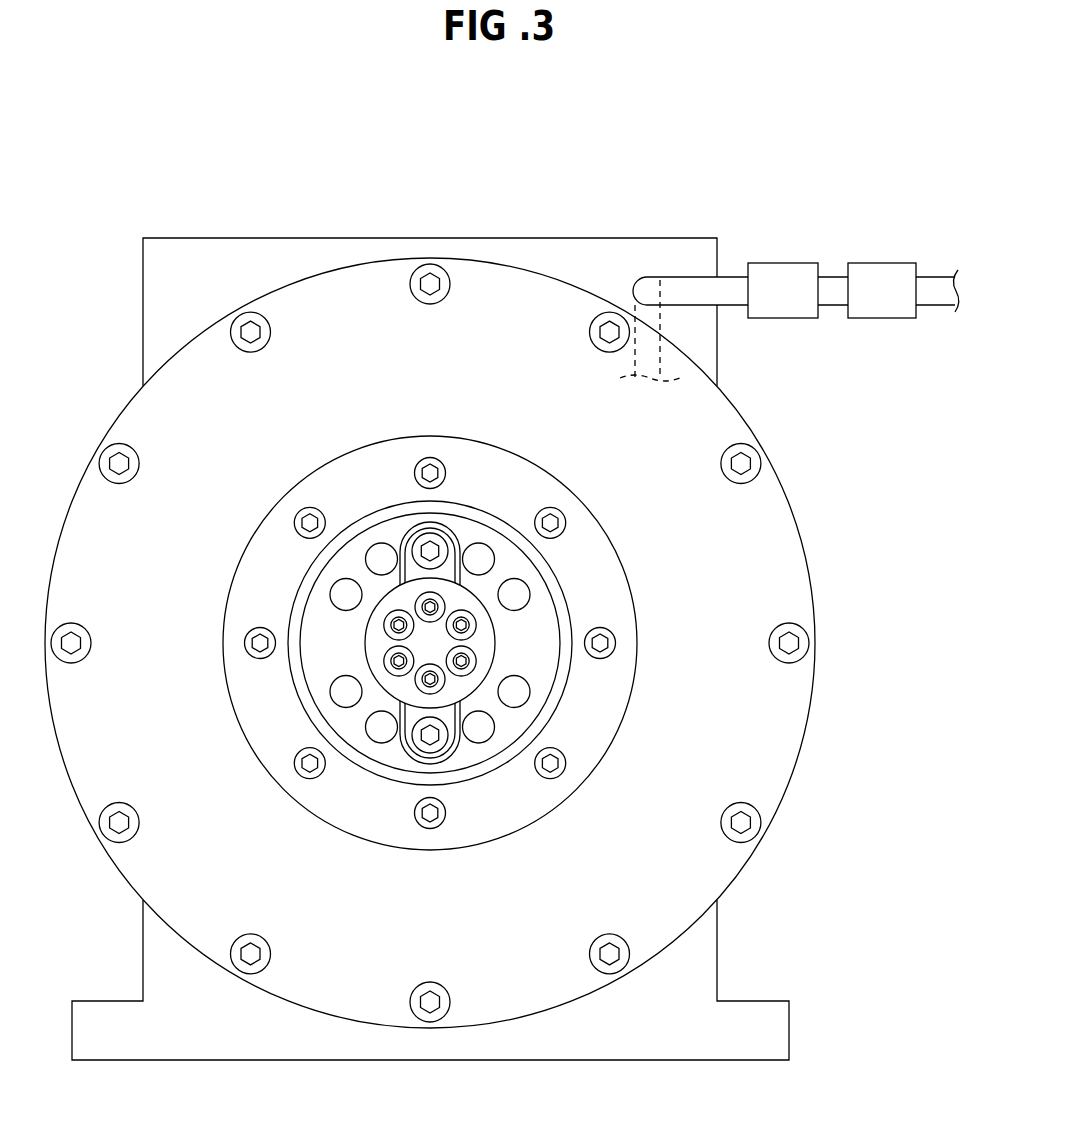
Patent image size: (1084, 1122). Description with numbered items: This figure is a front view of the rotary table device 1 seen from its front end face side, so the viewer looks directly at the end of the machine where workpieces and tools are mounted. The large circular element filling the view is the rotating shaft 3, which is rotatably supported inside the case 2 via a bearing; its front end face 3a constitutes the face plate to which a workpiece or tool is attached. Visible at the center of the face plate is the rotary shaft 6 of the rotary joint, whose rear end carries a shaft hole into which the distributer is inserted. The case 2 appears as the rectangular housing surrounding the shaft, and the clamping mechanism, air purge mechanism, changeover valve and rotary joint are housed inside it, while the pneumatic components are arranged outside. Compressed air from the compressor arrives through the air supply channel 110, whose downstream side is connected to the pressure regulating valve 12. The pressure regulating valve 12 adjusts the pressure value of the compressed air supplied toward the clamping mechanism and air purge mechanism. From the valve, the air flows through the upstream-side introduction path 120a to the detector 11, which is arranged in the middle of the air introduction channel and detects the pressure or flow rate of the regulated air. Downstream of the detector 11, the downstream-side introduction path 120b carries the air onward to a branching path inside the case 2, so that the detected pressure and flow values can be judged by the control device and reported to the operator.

The rotary table device 1 is at (470, 145).
The case 2 is at (645, 238).
The rotating shaft 3 is at (557, 608).
The front end face 3a is at (532, 660).
The rotary shaft 6 is at (462, 600).
The detector 11 is at (781, 263).
The pressure regulating valve 12 is at (881, 263).
The air supply channel 110 is at (932, 277).
The upstream-side introduction path 120a is at (832, 305).
The downstream-side introduction path 120b is at (733, 305).